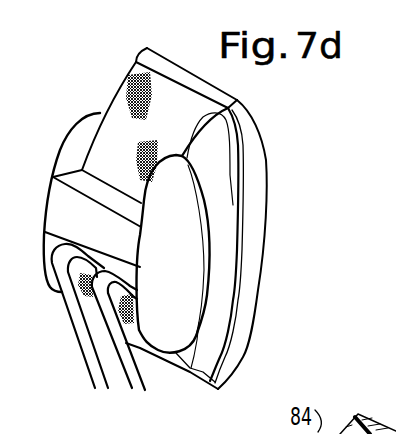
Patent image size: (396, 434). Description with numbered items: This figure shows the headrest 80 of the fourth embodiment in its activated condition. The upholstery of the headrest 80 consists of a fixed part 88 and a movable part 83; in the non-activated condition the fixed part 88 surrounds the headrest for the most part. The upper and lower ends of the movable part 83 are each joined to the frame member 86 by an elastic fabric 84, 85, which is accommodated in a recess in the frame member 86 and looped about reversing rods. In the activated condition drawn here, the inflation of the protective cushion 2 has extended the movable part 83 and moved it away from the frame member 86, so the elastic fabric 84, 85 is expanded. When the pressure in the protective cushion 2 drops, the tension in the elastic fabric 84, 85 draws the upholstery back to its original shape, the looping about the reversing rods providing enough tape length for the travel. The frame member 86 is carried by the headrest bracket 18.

The headrest 80 is at (270, 211).
The movable part of the upholstery 83 is at (252, 152).
The elastic fabric 84 is at (127, 82).
The fixed part of the upholstery 88 is at (62, 197).
The protective cushion 2 is at (220, 260).
The headrest bracket 18 is at (117, 347).
The elastic fabric 85 is at (167, 350).
The frame member 86 is at (9, 422).